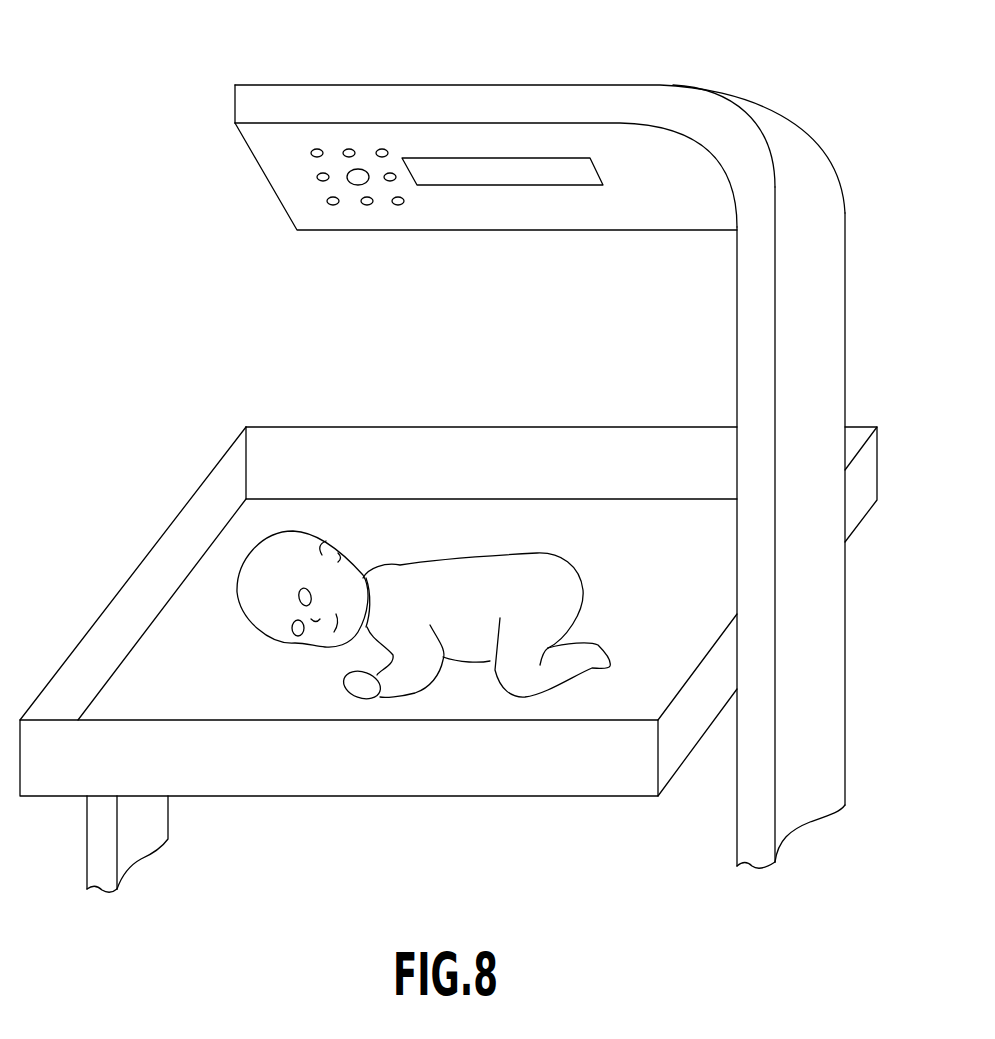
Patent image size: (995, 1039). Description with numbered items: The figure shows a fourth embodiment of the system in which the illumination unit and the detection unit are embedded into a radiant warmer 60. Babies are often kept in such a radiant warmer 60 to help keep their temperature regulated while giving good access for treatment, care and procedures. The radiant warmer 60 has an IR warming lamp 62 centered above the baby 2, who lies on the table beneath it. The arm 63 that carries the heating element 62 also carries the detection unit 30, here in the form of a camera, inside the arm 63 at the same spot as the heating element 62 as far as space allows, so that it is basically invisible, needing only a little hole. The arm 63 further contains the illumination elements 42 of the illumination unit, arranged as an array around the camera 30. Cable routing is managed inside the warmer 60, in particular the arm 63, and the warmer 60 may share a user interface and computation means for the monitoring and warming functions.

The radiant warmer 60 is at (540, 437).
The arm 63 is at (541, 104).
The detection unit 30 is at (358, 168).
The illumination elements 42 is at (333, 206).
The IR warming lamp 62 is at (518, 186).
The baby 2 is at (446, 565).